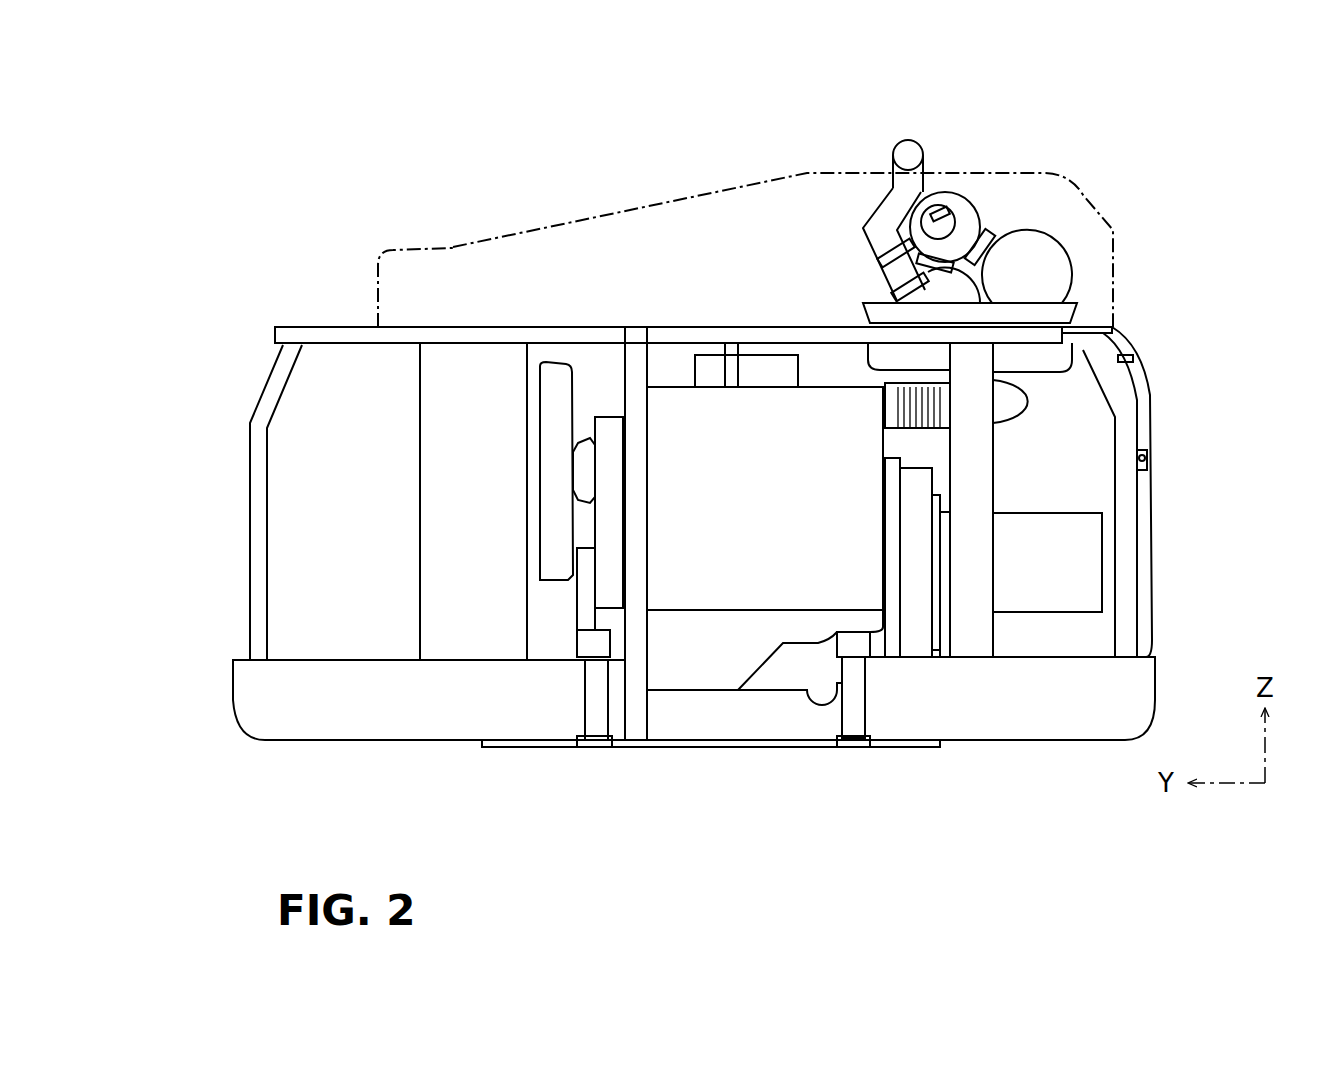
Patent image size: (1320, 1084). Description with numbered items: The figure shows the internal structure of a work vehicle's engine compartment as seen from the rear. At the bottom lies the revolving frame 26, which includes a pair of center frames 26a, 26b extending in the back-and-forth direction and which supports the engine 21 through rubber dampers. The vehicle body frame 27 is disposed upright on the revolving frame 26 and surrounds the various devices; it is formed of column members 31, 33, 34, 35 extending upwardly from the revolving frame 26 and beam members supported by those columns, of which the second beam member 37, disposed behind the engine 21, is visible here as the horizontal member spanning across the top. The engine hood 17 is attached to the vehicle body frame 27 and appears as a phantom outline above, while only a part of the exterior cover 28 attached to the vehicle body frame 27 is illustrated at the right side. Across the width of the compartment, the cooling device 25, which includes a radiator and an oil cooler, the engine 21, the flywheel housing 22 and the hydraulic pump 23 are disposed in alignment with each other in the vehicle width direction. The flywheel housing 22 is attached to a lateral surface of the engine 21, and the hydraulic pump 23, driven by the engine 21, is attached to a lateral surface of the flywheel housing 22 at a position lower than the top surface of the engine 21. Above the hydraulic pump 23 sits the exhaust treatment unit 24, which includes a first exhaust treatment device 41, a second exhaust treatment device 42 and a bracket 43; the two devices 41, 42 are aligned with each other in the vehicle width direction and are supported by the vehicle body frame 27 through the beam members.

The engine hood 17 is at (718, 186).
The engine 21 is at (768, 576).
The flywheel housing 22 is at (915, 648).
The hydraulic pump 23 is at (1030, 600).
The exhaust treatment unit 24 is at (957, 190).
The cooling device 25 is at (445, 378).
The revolving frame 26 is at (558, 753).
The center frame 26a is at (597, 707).
The center frame 26b is at (852, 707).
The vehicle body frame 27 is at (607, 306).
The exterior cover 28 is at (1150, 388).
The column member 31 is at (1128, 517).
The column member 33 is at (970, 632).
The column member 34 is at (636, 728).
The column member 35 is at (260, 452).
The second beam member 37 is at (793, 323).
The first exhaust treatment device 41 is at (1060, 238).
The second exhaust treatment device 42 is at (880, 293).
The bracket 43 is at (1078, 320).